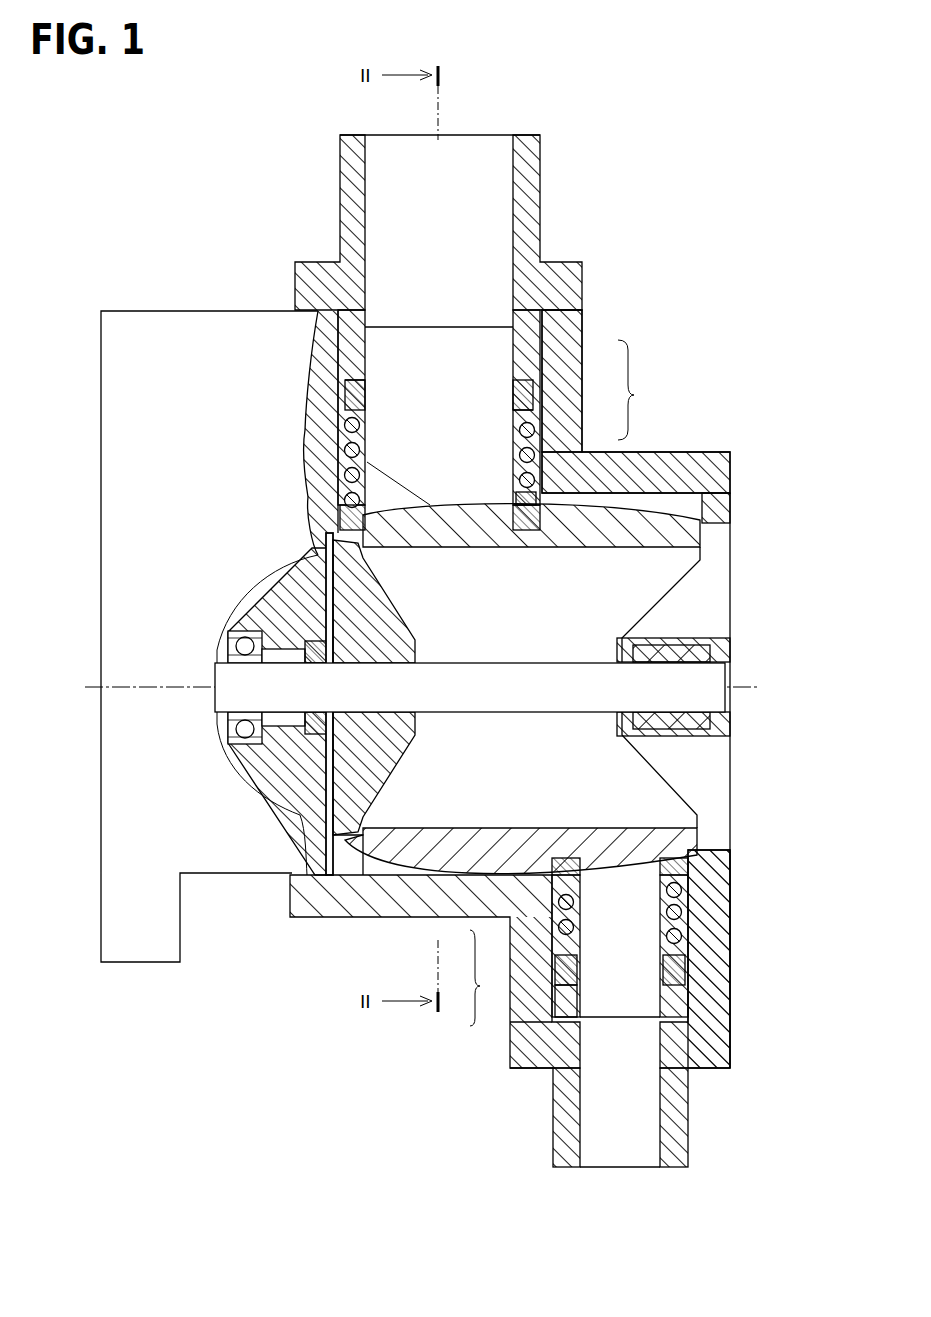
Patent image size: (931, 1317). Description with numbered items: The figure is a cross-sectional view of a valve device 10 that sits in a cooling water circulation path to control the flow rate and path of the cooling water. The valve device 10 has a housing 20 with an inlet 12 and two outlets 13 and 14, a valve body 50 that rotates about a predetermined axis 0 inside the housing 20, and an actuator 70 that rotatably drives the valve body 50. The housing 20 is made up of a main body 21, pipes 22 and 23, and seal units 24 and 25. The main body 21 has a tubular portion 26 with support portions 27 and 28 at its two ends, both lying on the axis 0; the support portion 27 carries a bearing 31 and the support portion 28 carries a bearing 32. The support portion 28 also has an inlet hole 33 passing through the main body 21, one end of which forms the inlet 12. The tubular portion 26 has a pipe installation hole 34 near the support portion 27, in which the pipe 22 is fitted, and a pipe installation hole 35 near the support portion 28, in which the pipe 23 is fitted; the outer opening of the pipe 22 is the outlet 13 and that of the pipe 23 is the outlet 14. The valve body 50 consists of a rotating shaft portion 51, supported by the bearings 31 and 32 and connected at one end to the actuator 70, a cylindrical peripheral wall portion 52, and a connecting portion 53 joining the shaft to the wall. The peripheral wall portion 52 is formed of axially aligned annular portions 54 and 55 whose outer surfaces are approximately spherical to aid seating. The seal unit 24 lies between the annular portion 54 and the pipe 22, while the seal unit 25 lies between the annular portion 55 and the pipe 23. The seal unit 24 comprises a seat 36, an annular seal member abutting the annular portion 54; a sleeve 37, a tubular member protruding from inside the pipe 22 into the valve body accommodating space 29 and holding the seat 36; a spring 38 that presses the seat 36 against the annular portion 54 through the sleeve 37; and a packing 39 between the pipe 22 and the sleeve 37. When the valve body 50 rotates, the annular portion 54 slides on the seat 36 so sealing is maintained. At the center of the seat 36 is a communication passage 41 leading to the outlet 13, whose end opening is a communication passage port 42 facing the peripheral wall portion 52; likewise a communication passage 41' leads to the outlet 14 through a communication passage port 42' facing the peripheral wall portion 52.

The valve device 10 is at (150, 168).
The outlet 13 is at (480, 135).
The pipe 22 is at (535, 190).
The actuator 70 is at (118, 311).
The pipe installation hole 34 is at (562, 292).
The packing 39 is at (542, 375).
The spring 38 is at (542, 400).
The sleeve 37 is at (542, 430).
The seat 36 is at (542, 460).
The seal unit 24 is at (639, 390).
The tubular portion 26 is at (678, 452).
The housing 20 is at (708, 440).
The peripheral wall portion 52 is at (332, 425).
The communication passage 41 is at (210, 463).
The communication passage port 42 is at (300, 541).
The rotating shaft portion 51 is at (216, 670).
The axis 0 is at (88, 684).
The inlet hole 33 is at (734, 545).
The inlet 12 is at (734, 612).
The bearing 32 is at (728, 680).
The support portion 28 is at (734, 738).
The bearing 31 is at (236, 728).
The support portion 27 is at (300, 790).
The connecting portion 53 is at (330, 786).
The valve body 50 is at (300, 848).
The valve body accommodating space 29 is at (336, 868).
The main body 21 is at (352, 905).
The annular portion 54 is at (432, 880).
The seal unit 25 is at (567, 950).
The communication passage port 42' is at (664, 840).
The communication passage 41' is at (721, 913).
The annular portion 55 is at (690, 951).
The pipe installation hole 35 is at (700, 1045).
The pipe 23 is at (678, 1126).
The outlet 14 is at (640, 1168).